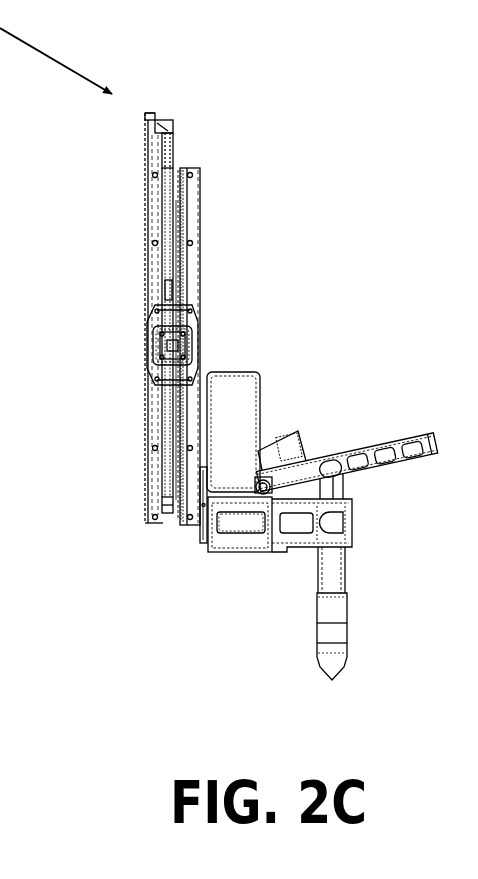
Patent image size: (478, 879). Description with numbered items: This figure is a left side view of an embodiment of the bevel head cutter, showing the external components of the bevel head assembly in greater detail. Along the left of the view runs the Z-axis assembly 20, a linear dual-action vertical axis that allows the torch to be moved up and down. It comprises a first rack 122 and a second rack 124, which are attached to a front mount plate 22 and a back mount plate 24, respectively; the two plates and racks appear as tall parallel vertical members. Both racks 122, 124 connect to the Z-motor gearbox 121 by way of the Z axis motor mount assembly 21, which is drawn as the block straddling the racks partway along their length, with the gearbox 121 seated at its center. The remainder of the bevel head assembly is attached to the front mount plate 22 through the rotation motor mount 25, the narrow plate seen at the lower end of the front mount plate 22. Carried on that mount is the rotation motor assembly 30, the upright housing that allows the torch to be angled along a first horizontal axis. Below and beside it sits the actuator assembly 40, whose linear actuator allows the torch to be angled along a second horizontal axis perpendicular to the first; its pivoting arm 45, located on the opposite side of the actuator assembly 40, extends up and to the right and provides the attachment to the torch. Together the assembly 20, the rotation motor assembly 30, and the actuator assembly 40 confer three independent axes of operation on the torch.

The Z-axis assembly 20 is at (312, 192).
The Z axis motor mount assembly 21 is at (152, 317).
The front mount plate 22 is at (200, 288).
The back mount plate 24 is at (143, 247).
The rotation motor mount 25 is at (197, 542).
The rotation motor assembly 30 is at (246, 442).
The actuator assembly 40 is at (290, 568).
The pivoting arm 45 is at (365, 452).
The Z-motor gearbox 121 is at (157, 345).
The first rack 122 is at (182, 227).
The second rack 124 is at (165, 209).